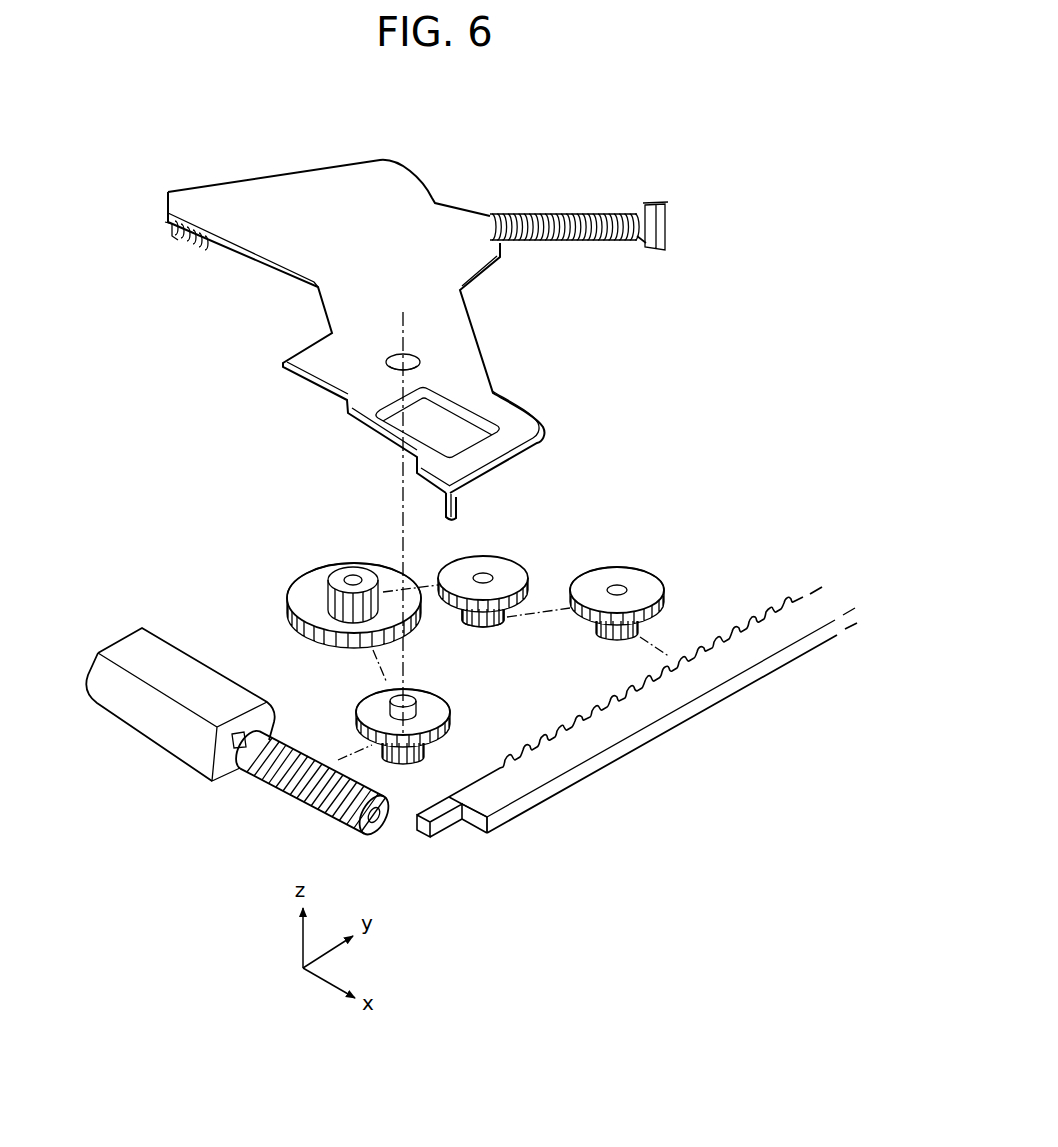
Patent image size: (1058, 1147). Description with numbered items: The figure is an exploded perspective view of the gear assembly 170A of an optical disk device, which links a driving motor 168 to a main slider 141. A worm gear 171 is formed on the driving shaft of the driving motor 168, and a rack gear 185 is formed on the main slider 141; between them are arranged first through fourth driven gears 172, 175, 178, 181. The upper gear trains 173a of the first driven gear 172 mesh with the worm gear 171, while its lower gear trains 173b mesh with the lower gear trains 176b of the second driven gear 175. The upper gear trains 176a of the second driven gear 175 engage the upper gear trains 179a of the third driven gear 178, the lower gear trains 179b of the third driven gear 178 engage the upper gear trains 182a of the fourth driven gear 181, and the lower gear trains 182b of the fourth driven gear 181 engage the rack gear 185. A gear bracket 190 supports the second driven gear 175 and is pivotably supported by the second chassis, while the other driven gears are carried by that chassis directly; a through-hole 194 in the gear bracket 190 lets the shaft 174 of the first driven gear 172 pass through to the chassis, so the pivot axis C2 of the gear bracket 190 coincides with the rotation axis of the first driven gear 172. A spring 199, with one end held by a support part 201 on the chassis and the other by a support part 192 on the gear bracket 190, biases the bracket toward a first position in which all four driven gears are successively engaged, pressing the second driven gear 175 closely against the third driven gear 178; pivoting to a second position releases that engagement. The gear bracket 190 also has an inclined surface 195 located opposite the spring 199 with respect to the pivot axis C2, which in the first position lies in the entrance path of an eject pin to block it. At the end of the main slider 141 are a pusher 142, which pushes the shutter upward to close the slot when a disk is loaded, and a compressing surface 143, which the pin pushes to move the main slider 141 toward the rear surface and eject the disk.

The gear assembly 170A is at (150, 172).
The gear bracket 190 is at (284, 180).
The support part 192 is at (172, 237).
The through-hole 194 is at (418, 360).
The inclined surface 195 is at (456, 506).
The spring 199 is at (546, 212).
The support part 201 is at (667, 214).
The pivot axis C2 is at (403, 323).
The second driven gear 175 is at (286, 612).
The upper gear trains 176a is at (336, 574).
The lower gear trains 176b is at (300, 596).
The third driven gear 178 is at (529, 556).
The upper gear trains 179a is at (497, 627).
The lower gear trains 179b is at (468, 624).
The fourth driven gear 181 is at (641, 559).
The upper gear trains 182a is at (585, 616).
The lower gear trains 182b is at (616, 641).
The first driven gear 172 is at (355, 702).
The upper gear trains 173a is at (450, 722).
The lower gear trains 173b is at (426, 757).
The shaft 174 is at (390, 703).
The driving motor 168 is at (148, 728).
The worm gear 171 is at (283, 794).
The main slider 141 is at (781, 663).
The pusher 142 is at (425, 827).
The compressing surface 143 is at (480, 826).
The rack gear 185 is at (559, 730).